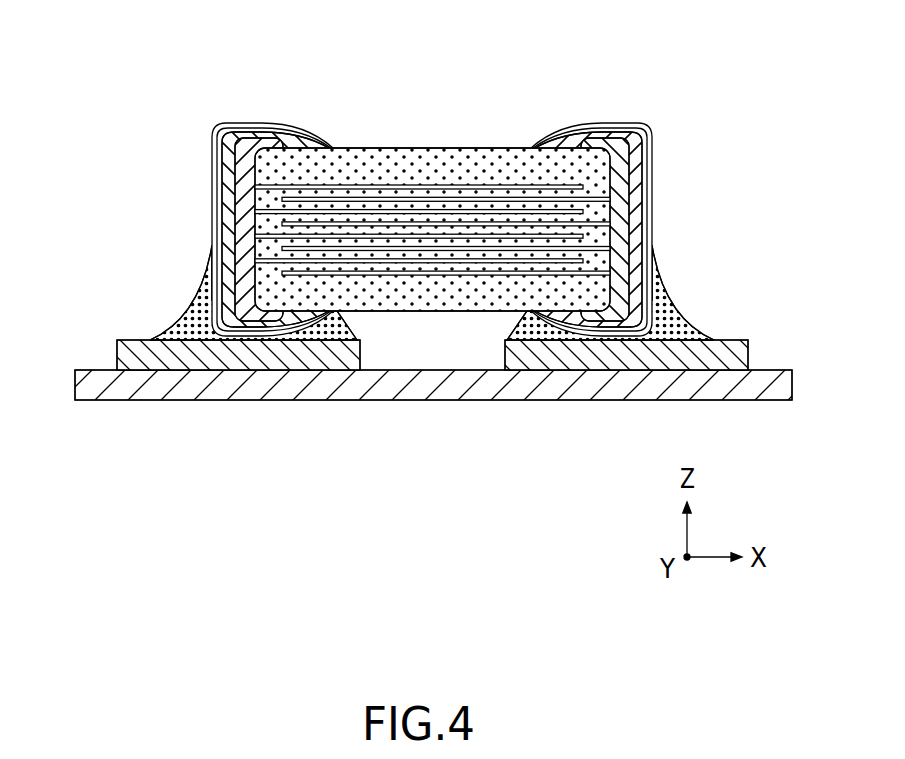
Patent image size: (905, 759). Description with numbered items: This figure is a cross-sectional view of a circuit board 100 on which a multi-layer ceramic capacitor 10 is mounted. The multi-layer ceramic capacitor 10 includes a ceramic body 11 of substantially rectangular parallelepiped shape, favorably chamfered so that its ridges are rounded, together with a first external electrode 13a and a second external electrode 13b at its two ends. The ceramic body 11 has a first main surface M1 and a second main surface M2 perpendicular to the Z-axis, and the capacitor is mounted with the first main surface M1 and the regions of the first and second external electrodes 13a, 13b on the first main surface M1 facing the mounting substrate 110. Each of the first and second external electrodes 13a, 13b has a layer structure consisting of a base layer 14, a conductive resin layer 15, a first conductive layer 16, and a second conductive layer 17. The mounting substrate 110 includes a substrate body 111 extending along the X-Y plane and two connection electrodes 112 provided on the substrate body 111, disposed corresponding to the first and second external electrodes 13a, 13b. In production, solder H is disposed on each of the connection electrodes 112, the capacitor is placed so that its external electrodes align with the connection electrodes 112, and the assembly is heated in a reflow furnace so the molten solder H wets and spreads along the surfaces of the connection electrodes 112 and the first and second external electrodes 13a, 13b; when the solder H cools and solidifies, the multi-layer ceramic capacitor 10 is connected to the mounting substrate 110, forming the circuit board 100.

The circuit board 100 is at (425, 312).
The multi-layer ceramic capacitor 10 is at (431, 184).
The ceramic body 11 is at (416, 140).
The first external electrode 13a is at (222, 110).
The second external electrode 13b is at (642, 112).
The base layer 14 is at (265, 138).
The conductive resin layer 15 is at (292, 140).
The first conductive layer 16 is at (211, 155).
The second conductive layer 17 is at (211, 183).
The solder H is at (196, 298).
The mounting substrate 110 is at (425, 399).
The substrate body 111 is at (245, 392).
The connection electrodes 112 is at (120, 355).
The first main surface M1 is at (377, 314).
The second main surface M2 is at (472, 147).